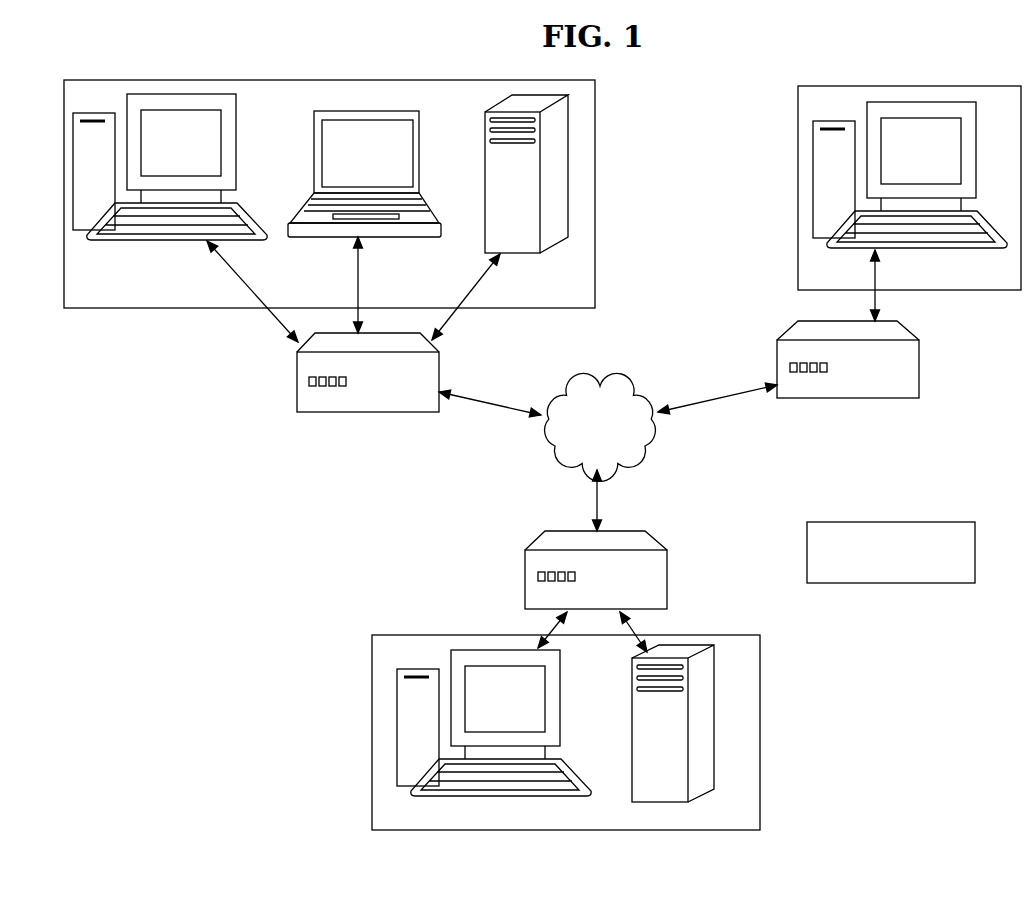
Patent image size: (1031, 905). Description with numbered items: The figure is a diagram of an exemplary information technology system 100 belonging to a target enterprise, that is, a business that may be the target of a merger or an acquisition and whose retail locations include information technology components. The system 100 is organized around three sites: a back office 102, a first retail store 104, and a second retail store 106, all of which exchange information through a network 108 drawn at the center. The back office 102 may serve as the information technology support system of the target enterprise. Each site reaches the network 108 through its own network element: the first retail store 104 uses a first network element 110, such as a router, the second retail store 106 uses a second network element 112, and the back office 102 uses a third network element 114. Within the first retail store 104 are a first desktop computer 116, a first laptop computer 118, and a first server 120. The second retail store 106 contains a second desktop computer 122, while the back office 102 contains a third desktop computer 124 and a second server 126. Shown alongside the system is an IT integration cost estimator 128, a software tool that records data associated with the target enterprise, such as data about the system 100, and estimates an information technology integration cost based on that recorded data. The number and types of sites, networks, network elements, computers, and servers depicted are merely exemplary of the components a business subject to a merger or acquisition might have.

The information technology system 100 is at (590, 70).
The back office 102 is at (380, 698).
The first retail store 104 is at (174, 306).
The second retail store 106 is at (997, 292).
The network 108 is at (571, 465).
The first network element 110 is at (374, 411).
The second network element 112 is at (857, 400).
The third network element 114 is at (540, 572).
The first desktop computer 116 is at (137, 242).
The first laptop computer 118 is at (337, 237).
The first server 120 is at (540, 253).
The second desktop computer 122 is at (960, 250).
The third desktop computer 124 is at (446, 796).
The second server 126 is at (646, 796).
The IT integration cost estimator 128 is at (887, 586).